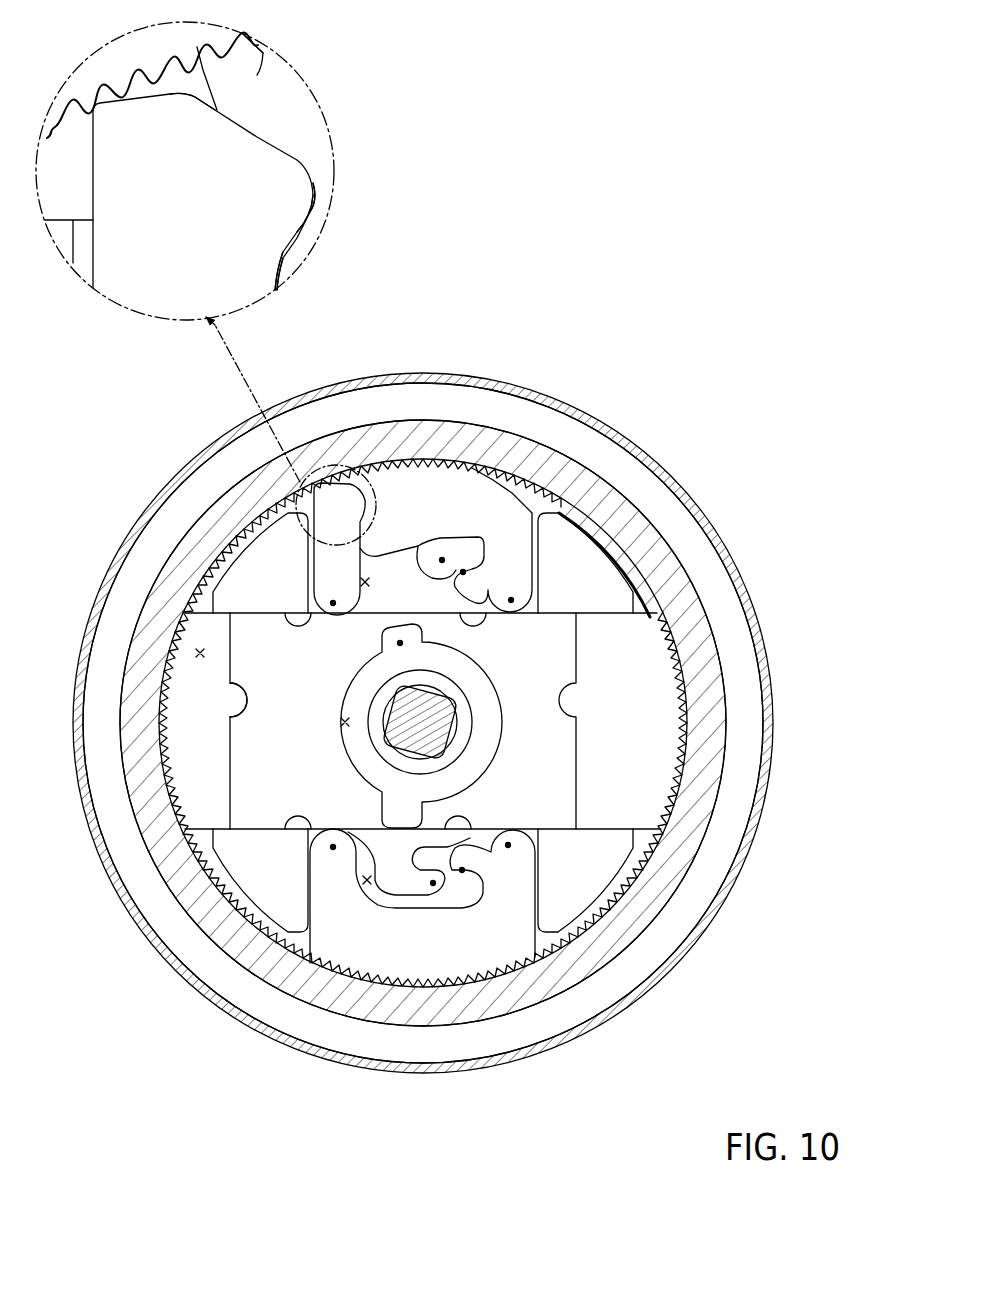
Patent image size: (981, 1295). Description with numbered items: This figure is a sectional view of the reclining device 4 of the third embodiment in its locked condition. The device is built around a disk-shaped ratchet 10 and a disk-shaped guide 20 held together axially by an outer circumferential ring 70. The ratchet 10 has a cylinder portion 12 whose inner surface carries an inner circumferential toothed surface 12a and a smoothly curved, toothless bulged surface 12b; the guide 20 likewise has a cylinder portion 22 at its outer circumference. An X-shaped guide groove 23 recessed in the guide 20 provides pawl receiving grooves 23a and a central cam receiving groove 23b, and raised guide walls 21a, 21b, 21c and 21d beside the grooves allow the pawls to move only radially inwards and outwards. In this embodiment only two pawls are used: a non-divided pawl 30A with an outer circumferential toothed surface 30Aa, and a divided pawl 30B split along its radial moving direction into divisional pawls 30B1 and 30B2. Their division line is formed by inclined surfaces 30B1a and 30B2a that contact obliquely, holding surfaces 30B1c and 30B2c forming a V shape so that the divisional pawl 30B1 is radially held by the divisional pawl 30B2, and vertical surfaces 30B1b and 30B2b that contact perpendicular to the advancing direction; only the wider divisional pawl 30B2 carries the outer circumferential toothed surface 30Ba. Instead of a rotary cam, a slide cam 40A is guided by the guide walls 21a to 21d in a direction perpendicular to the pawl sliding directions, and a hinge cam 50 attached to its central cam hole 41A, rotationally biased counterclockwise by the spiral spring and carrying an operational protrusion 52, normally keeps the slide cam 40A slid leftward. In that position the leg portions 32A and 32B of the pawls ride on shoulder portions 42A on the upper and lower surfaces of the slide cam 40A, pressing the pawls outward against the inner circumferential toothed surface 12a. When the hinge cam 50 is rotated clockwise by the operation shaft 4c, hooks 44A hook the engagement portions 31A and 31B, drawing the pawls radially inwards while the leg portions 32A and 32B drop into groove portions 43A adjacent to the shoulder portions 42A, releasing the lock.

The reclining device 4 is at (728, 489).
The ratchet 10 is at (427, 726).
The cylinder portion 12 is at (623, 507).
The inner circumferential toothed surface 12a is at (380, 457).
The bulged surface 12b is at (590, 547).
The guide 20 is at (461, 723).
The cylinder portion 22 is at (724, 594).
The guide groove 23 is at (341, 775).
The pawl receiving groove 23a is at (365, 580).
The cam receiving groove 23b is at (200, 653).
The guide wall 21a is at (597, 603).
The guide wall 21b is at (272, 580).
The guide wall 21c is at (583, 843).
The guide wall 21d is at (258, 830).
The non-divided pawl 30A is at (505, 957).
The outer circumferential toothed surface 30Aa is at (415, 990).
The divided pawl 30B is at (652, 322).
The divisional pawl 30B1 is at (375, 495).
The inclined surface 30B1a is at (243, 110).
The vertical surface 30B1b is at (277, 257).
The holding surface 30B1c is at (287, 230).
The divisional pawl 30B2 is at (507, 488).
The inclined surface 30B2a is at (263, 137).
The vertical surface 30B2b is at (263, 297).
The holding surface 30B2c is at (313, 200).
The outer circumferential toothed surface 30Ba is at (430, 468).
The engagement portion 31A is at (462, 873).
The engagement portion 31B is at (463, 572).
The leg portion 32A is at (335, 845).
The leg portion 32B is at (335, 605).
The slide cam 40A is at (562, 728).
The cam hole 41A is at (345, 722).
The shoulder portion 42A is at (332, 618).
The groove portion 43A is at (298, 624).
The hook 44A is at (442, 560).
The hinge cam 50 is at (466, 705).
The operational protrusion 52 is at (400, 641).
The operation shaft 4c is at (425, 727).
The outer circumferential ring 70 is at (728, 544).